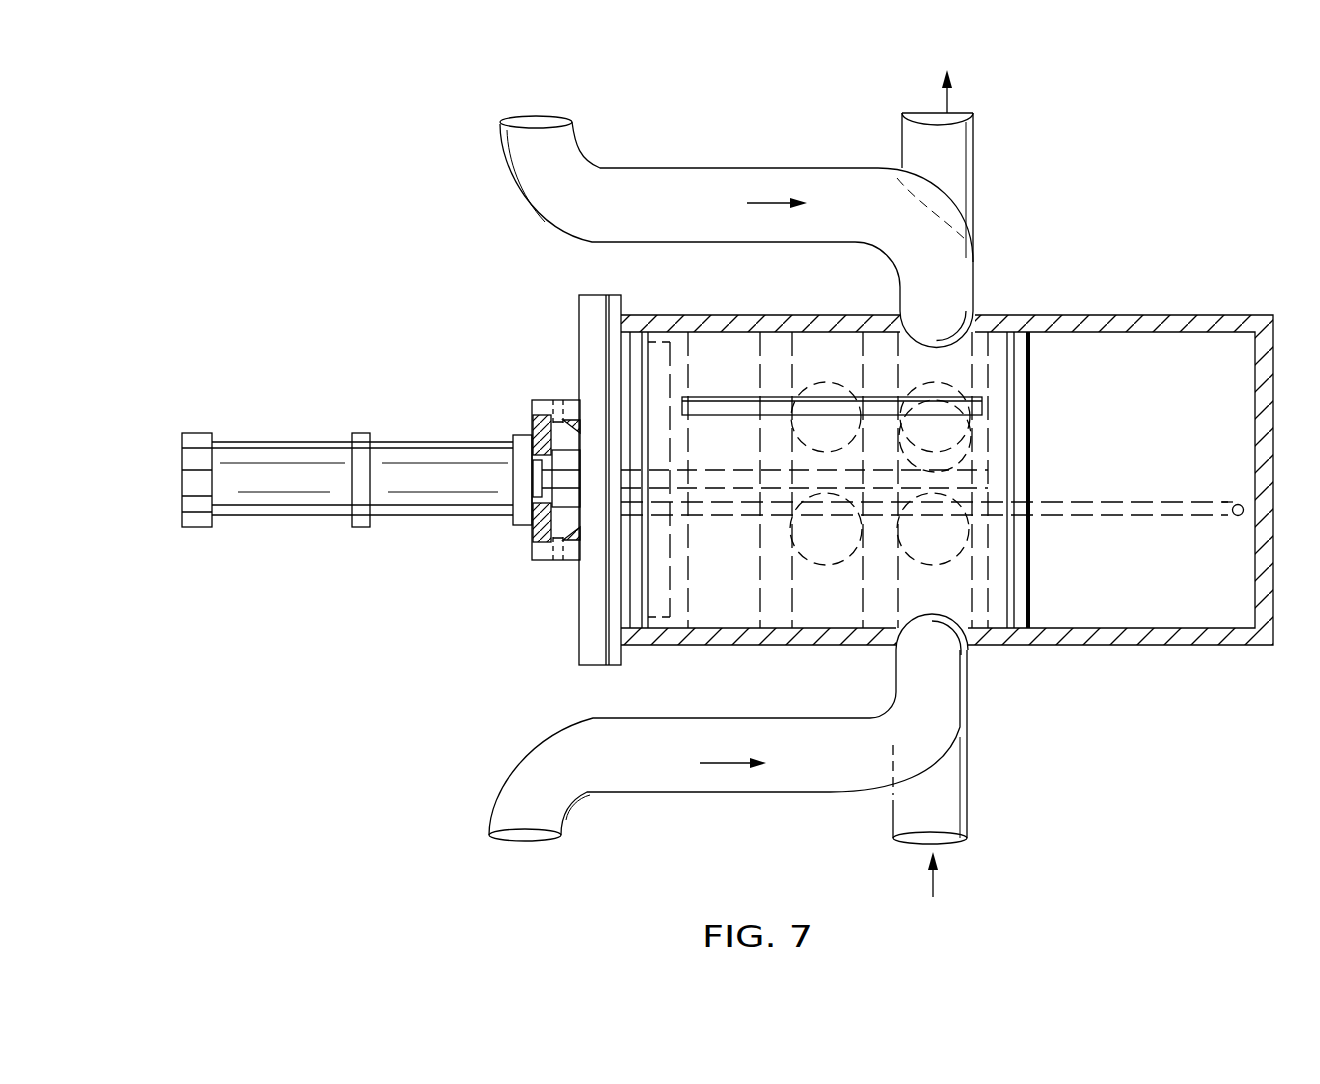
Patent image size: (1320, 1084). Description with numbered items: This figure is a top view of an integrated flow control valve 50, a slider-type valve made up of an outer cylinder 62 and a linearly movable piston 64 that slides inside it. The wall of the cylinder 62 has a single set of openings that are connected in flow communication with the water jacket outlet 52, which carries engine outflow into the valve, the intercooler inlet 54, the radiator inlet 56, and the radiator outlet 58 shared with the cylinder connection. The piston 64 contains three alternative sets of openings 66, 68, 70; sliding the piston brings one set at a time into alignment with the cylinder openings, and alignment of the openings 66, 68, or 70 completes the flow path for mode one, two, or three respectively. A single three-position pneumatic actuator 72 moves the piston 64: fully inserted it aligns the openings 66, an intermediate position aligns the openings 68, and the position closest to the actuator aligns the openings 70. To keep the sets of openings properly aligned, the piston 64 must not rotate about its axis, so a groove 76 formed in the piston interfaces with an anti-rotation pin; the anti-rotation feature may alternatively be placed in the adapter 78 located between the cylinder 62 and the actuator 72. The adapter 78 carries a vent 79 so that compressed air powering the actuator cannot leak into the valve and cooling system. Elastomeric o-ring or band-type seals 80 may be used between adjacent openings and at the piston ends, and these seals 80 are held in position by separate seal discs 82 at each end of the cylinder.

The flow control valve 50 is at (1130, 732).
The water jacket outlet 52 is at (728, 167).
The intercooler inlet 54 is at (977, 134).
The radiator inlet 56 is at (697, 793).
The radiator outlet 58 is at (967, 803).
The outer cylinder 62 is at (1148, 315).
The piston 64 is at (707, 610).
The openings 66 is at (727, 645).
The openings 68 is at (828, 322).
The openings 70 is at (942, 540).
The three-position pneumatic actuator 72 is at (268, 518).
The groove 76 is at (730, 405).
The adapter 78 is at (532, 425).
The vent 79 is at (558, 402).
The seals 80 is at (1014, 332).
The seal discs 82 is at (633, 618).